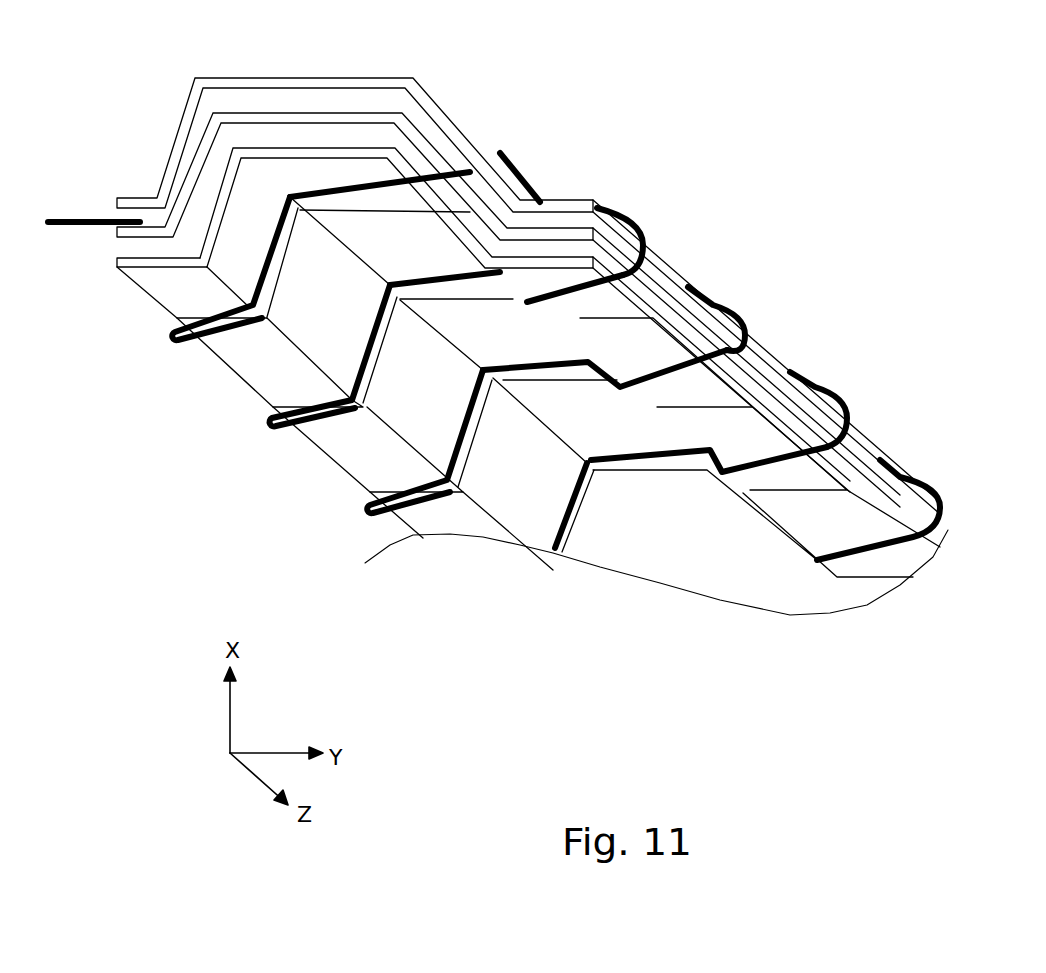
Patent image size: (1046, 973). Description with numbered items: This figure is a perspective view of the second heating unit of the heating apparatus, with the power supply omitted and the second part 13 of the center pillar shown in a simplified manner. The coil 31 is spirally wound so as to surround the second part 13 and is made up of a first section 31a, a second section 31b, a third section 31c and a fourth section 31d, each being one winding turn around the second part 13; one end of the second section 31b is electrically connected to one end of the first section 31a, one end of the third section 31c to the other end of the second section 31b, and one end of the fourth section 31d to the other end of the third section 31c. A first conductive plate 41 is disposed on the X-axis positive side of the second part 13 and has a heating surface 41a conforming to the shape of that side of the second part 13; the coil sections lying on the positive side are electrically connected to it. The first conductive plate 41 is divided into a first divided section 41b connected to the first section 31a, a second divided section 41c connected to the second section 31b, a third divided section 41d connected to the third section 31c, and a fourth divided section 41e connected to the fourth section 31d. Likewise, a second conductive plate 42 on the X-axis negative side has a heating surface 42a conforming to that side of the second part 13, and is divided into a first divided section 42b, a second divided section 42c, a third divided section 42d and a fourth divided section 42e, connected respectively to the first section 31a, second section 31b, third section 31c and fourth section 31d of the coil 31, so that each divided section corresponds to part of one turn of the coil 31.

The second part 13 is at (391, 116).
The coil 31 is at (526, 168).
The first section 31a is at (583, 517).
The second section 31b is at (470, 440).
The third section 31c is at (372, 350).
The fourth section 31d is at (277, 252).
The first conductive plate 41 is at (364, 71).
The heating surface 41a is at (295, 92).
The first divided section 41b is at (880, 452).
The second divided section 41c is at (785, 372).
The third divided section 41d is at (697, 290).
The fourth divided section 41e is at (602, 204).
The second conductive plate 42 is at (258, 405).
The heating surface 42a is at (143, 252).
The first divided section 42b is at (410, 523).
The second divided section 42c is at (342, 460).
The third divided section 42d is at (233, 367).
The fourth divided section 42e is at (163, 290).